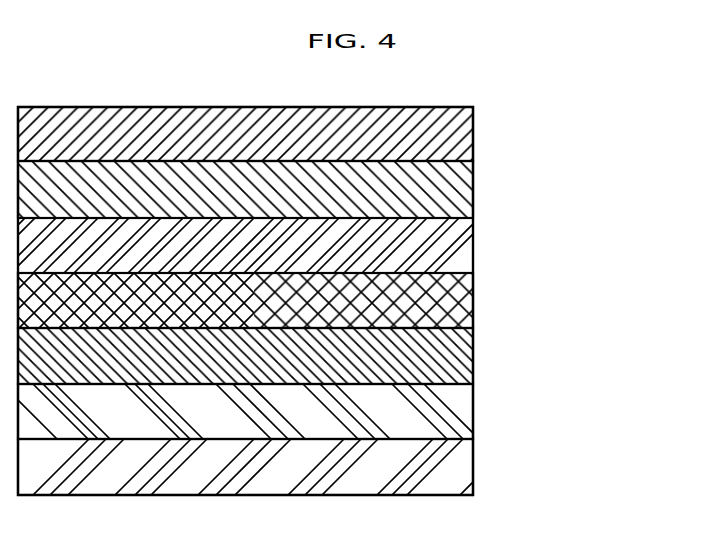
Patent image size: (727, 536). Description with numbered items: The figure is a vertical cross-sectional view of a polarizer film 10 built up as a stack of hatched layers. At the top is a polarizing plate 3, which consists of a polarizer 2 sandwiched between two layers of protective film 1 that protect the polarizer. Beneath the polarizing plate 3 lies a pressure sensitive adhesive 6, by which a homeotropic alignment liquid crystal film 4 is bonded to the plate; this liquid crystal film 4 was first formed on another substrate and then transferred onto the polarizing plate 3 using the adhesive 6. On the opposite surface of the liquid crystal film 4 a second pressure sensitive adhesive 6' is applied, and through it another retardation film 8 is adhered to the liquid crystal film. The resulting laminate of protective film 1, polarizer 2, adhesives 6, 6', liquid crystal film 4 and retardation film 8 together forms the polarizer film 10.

The protective film 1 is at (473, 135).
The polarizer 2 is at (473, 187).
The polarizing plate 3 is at (560, 100).
The homeotropic alignment liquid crystal film 4 is at (473, 358).
The pressure sensitive adhesive 6 is at (289, 294).
The pressure sensitive adhesive 6' is at (293, 405).
The retardation film 8 is at (473, 470).
The polarizer film 10 is at (590, 433).